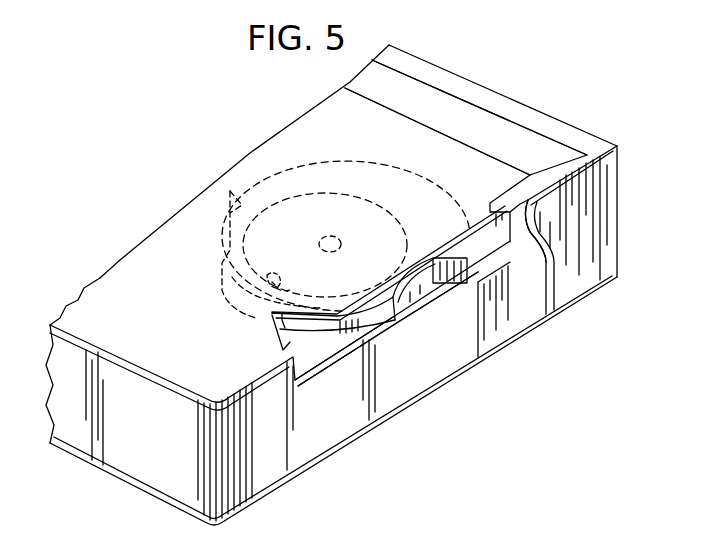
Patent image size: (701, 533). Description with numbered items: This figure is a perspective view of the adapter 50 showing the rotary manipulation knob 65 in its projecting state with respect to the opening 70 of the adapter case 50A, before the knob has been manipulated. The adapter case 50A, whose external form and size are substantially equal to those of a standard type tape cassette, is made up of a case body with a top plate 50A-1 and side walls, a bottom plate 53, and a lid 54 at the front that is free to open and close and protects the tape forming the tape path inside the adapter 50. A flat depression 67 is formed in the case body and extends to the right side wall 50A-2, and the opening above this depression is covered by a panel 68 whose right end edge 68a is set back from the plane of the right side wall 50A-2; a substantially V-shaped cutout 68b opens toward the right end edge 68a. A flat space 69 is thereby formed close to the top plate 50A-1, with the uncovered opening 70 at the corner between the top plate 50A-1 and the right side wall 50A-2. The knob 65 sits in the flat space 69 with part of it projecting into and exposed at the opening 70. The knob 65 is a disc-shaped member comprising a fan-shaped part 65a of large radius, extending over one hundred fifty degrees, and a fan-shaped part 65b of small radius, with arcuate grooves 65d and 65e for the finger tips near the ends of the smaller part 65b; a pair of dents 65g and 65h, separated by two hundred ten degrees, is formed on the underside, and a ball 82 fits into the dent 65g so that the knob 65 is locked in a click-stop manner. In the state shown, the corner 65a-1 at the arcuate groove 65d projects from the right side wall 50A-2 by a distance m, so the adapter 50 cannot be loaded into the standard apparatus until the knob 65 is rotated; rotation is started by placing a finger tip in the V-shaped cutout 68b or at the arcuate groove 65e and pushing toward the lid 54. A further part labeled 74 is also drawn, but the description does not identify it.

The adapter 50 is at (492, 53).
The adapter case 50A is at (60, 308).
The top plate 50A-1 is at (510, 127).
The right side wall 50A-2 is at (391, 396).
The bottom plate 53 is at (350, 446).
The lid 54 is at (615, 195).
The rotary manipulation knob 65 is at (395, 321).
The fan-shaped part of large radius 65a is at (363, 162).
The corner 65a-1 is at (480, 262).
The fan-shaped part of small radius 65b is at (233, 295).
The arcuate groove 65d is at (413, 288).
The arcuate groove 65e is at (228, 241).
The dent 65g is at (283, 285).
The dent 65h is at (401, 210).
The flat depression 67 is at (330, 348).
The panel 68 is at (426, 135).
The right end edge 68a is at (450, 247).
The V-shaped cutout 68b is at (283, 338).
The flat space 69 is at (497, 167).
The opening 70 is at (490, 243).
The hole 74 is at (330, 237).
The ball 82 is at (272, 274).